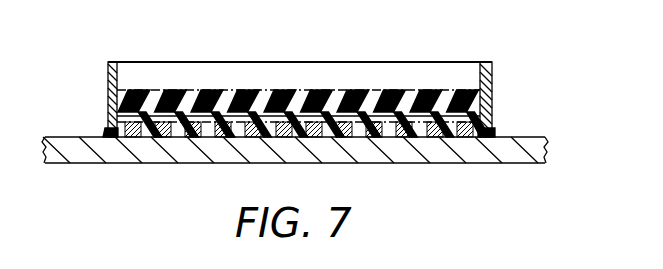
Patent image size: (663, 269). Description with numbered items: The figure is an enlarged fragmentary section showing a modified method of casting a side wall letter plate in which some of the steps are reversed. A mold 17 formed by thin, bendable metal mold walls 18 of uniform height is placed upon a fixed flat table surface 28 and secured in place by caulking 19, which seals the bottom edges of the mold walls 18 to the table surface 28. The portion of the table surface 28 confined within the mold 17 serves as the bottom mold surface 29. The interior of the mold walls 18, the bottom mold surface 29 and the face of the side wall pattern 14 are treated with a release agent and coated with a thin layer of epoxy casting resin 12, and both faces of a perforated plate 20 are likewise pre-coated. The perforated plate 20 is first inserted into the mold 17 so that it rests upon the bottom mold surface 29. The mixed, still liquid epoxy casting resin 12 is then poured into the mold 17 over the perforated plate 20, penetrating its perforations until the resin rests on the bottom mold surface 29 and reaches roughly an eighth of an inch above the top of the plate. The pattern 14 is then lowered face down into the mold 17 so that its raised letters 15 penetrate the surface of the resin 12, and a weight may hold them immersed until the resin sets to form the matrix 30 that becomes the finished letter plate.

The epoxy casting resin 12 is at (390, 115).
The side wall pattern 14 is at (192, 97).
The raised letters 15 is at (257, 113).
The mold 17 is at (498, 80).
The mold walls 18 is at (355, 70).
The caulking material 19 is at (107, 137).
The perforated plate 20 is at (375, 132).
The table surface 28 is at (510, 134).
The bottom mold surface 29 is at (432, 112).
The matrix 30 is at (153, 109).